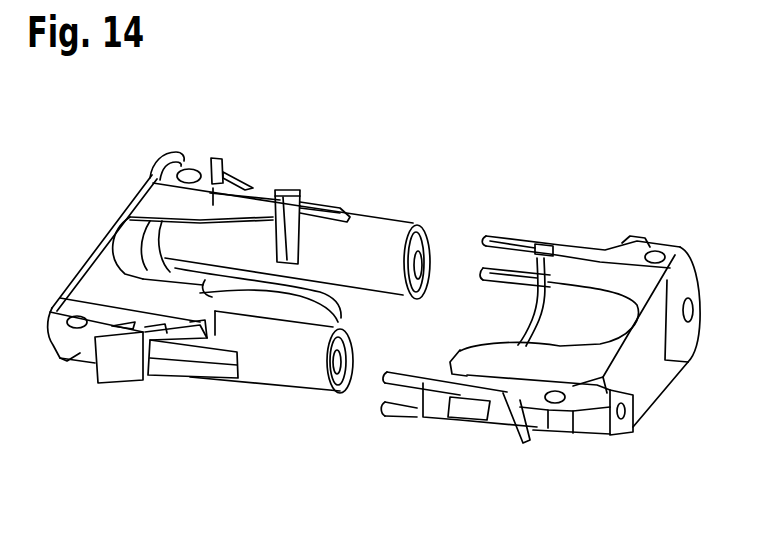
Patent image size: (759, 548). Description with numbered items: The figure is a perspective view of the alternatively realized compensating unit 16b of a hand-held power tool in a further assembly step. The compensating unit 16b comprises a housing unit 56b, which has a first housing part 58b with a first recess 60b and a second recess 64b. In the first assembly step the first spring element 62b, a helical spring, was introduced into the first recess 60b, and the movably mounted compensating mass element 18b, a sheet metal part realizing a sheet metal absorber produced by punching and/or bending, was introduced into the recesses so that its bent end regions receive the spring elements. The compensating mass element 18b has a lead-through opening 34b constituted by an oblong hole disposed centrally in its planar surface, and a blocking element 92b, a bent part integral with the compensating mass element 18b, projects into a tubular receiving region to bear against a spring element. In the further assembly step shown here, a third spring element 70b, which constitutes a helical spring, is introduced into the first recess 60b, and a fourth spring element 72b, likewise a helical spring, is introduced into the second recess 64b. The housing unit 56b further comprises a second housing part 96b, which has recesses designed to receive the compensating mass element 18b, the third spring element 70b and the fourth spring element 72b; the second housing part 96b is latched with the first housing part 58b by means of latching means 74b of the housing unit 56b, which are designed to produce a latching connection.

The compensating unit 16b is at (172, 410).
The compensating mass element 18b is at (373, 240).
The lead-through opening 34b is at (255, 283).
The housing unit 56b is at (582, 147).
The first housing part 58b is at (208, 205).
The first recess 60b is at (430, 261).
The first spring element 62b is at (282, 195).
The second recess 64b is at (342, 372).
The third spring element 70b is at (420, 265).
The fourth spring element 72b is at (345, 392).
The latching means 74b is at (410, 403).
The blocking element 92b is at (317, 203).
The second housing part 96b is at (589, 240).